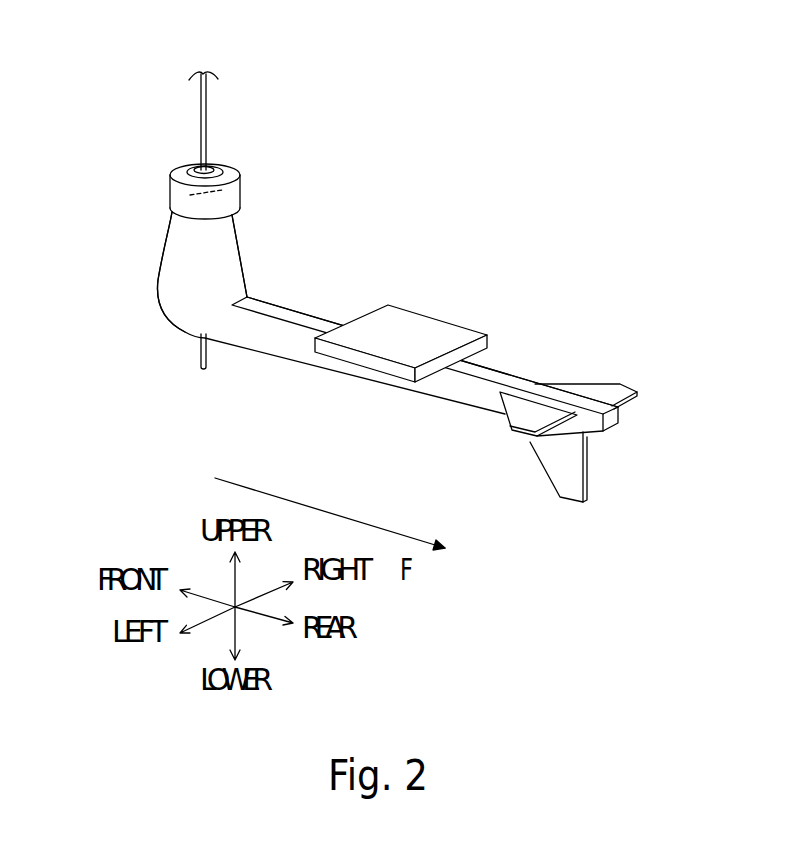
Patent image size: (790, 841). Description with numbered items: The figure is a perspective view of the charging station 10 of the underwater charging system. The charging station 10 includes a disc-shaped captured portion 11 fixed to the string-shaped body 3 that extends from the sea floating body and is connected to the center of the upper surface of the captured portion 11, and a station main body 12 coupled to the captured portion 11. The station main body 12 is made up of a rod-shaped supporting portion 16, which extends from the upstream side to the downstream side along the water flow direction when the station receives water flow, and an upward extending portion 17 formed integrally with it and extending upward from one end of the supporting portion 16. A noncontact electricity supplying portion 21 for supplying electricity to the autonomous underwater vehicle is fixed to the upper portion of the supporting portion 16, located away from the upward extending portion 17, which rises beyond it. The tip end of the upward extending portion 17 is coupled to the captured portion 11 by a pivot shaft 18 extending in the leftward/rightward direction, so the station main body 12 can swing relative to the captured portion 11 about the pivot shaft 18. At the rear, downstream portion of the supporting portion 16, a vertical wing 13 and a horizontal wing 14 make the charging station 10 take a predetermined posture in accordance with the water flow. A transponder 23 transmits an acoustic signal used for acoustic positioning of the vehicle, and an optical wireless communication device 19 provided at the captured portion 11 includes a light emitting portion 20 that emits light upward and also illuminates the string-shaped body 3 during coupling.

The string-shaped body 3 is at (197, 125).
The charging station 10 is at (588, 188).
The captured portion 11 is at (180, 197).
The station main body 12 is at (297, 360).
The vertical wing 13 is at (587, 460).
The horizontal wing 14 is at (523, 410).
The supporting portion 16 is at (303, 314).
The upward extending portion 17 is at (240, 247).
The pivot shaft 18 is at (172, 204).
The optical wireless communication device 19 is at (238, 174).
The light emitting portion 20 is at (190, 168).
The noncontact electricity supplying portion 21 is at (430, 313).
The transponder 23 is at (202, 352).